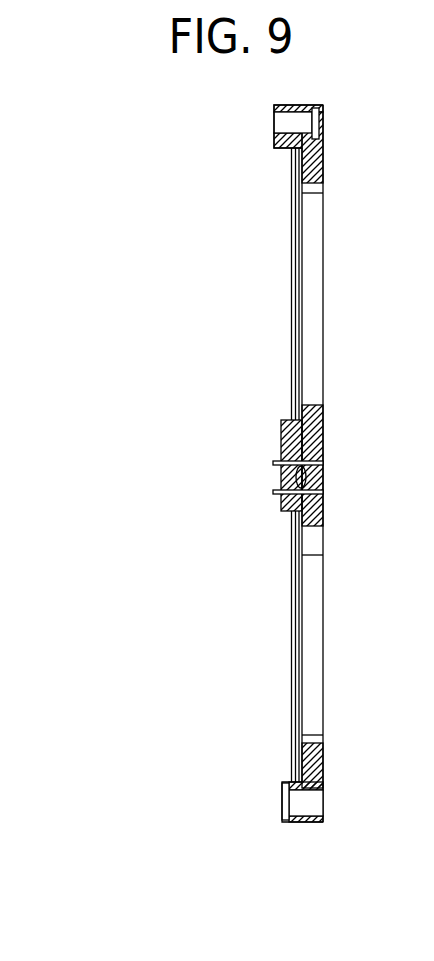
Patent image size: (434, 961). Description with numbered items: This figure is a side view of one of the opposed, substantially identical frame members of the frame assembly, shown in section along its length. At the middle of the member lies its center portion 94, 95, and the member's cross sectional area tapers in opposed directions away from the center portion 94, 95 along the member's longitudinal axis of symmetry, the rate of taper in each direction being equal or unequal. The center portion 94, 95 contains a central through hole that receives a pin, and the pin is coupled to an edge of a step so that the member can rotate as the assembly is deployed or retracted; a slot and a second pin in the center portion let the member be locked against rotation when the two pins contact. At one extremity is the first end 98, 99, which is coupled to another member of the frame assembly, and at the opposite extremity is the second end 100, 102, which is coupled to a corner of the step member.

The center portion 94 is at (195, 463).
The center portion 95 is at (234, 461).
The first end 98 is at (190, 126).
The first end 99 is at (224, 122).
The second end 100 is at (182, 802).
The second end 102 is at (242, 802).